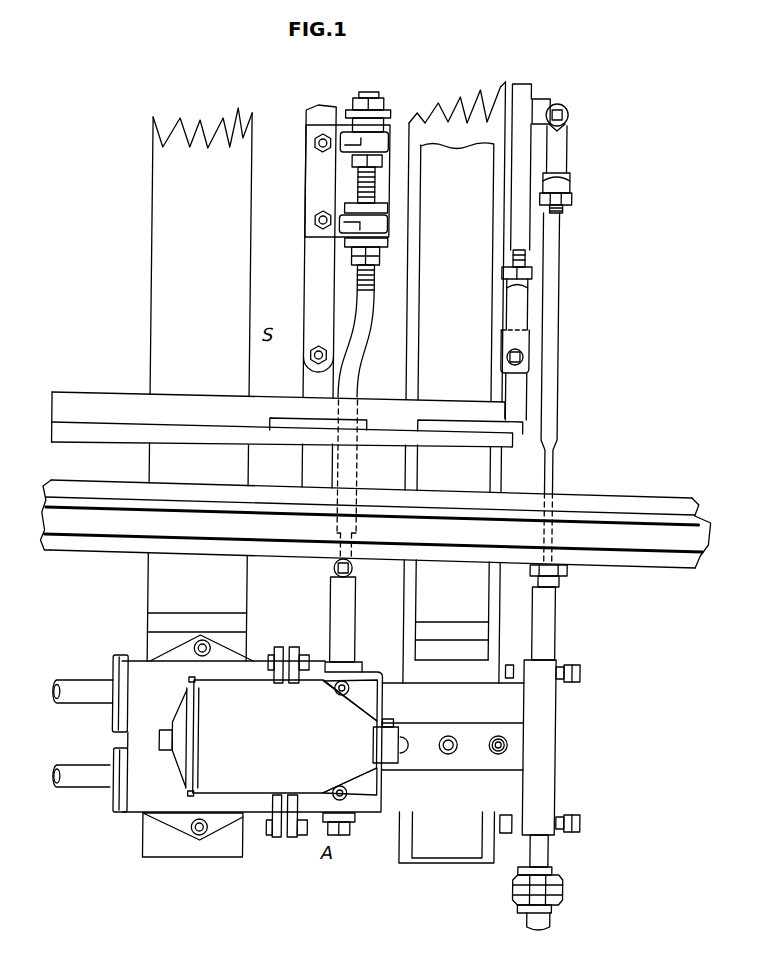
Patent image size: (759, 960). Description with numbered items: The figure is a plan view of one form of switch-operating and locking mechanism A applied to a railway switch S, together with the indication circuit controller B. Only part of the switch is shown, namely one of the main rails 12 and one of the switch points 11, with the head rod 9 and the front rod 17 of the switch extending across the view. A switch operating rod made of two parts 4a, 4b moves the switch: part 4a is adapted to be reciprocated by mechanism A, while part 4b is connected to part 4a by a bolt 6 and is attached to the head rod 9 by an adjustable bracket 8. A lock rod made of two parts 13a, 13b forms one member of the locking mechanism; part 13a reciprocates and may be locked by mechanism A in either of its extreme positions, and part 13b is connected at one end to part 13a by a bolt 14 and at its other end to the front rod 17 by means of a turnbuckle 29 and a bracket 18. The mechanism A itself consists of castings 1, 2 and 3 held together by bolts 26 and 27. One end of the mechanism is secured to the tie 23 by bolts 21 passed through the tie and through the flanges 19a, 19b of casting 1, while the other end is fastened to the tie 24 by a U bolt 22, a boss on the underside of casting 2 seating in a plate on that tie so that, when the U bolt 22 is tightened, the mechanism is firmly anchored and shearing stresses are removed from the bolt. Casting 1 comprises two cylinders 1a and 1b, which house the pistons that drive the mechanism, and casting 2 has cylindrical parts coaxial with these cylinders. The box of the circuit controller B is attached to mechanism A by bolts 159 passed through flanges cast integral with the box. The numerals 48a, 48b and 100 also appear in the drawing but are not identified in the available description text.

The casting 1 is at (268, 814).
The cylinder 1a is at (140, 812).
The cylinder 1b is at (140, 668).
The casting 2 is at (382, 815).
The casting 3 is at (553, 822).
The switch operating rod part 4a is at (352, 613).
The switch operating rod part 4b is at (355, 378).
The bolt 6 is at (336, 570).
The adjustable bracket 8 is at (378, 213).
The head rod 9 is at (301, 261).
The switch point 11 is at (287, 419).
The main rail 12 is at (375, 524).
The lock rod part 13a is at (560, 633).
The lock rod part 13b is at (556, 372).
The bolt 14 is at (560, 580).
The front rod 17 is at (504, 311).
The bracket 18 is at (542, 102).
The flange 19a is at (183, 832).
The flange 19b is at (168, 657).
The bolt 21 is at (212, 651).
The U bolt 22 is at (412, 744).
The tie 23 is at (152, 578).
The tie 24 is at (442, 848).
The bolt 26 is at (303, 652).
The bolt 27 is at (583, 674).
The turnbuckle 29 is at (558, 186).
The lower shaft 48a is at (84, 782).
The upper shaft 48b is at (93, 705).
The turnbuckle 100 is at (571, 888).
The bolt 159 is at (350, 744).